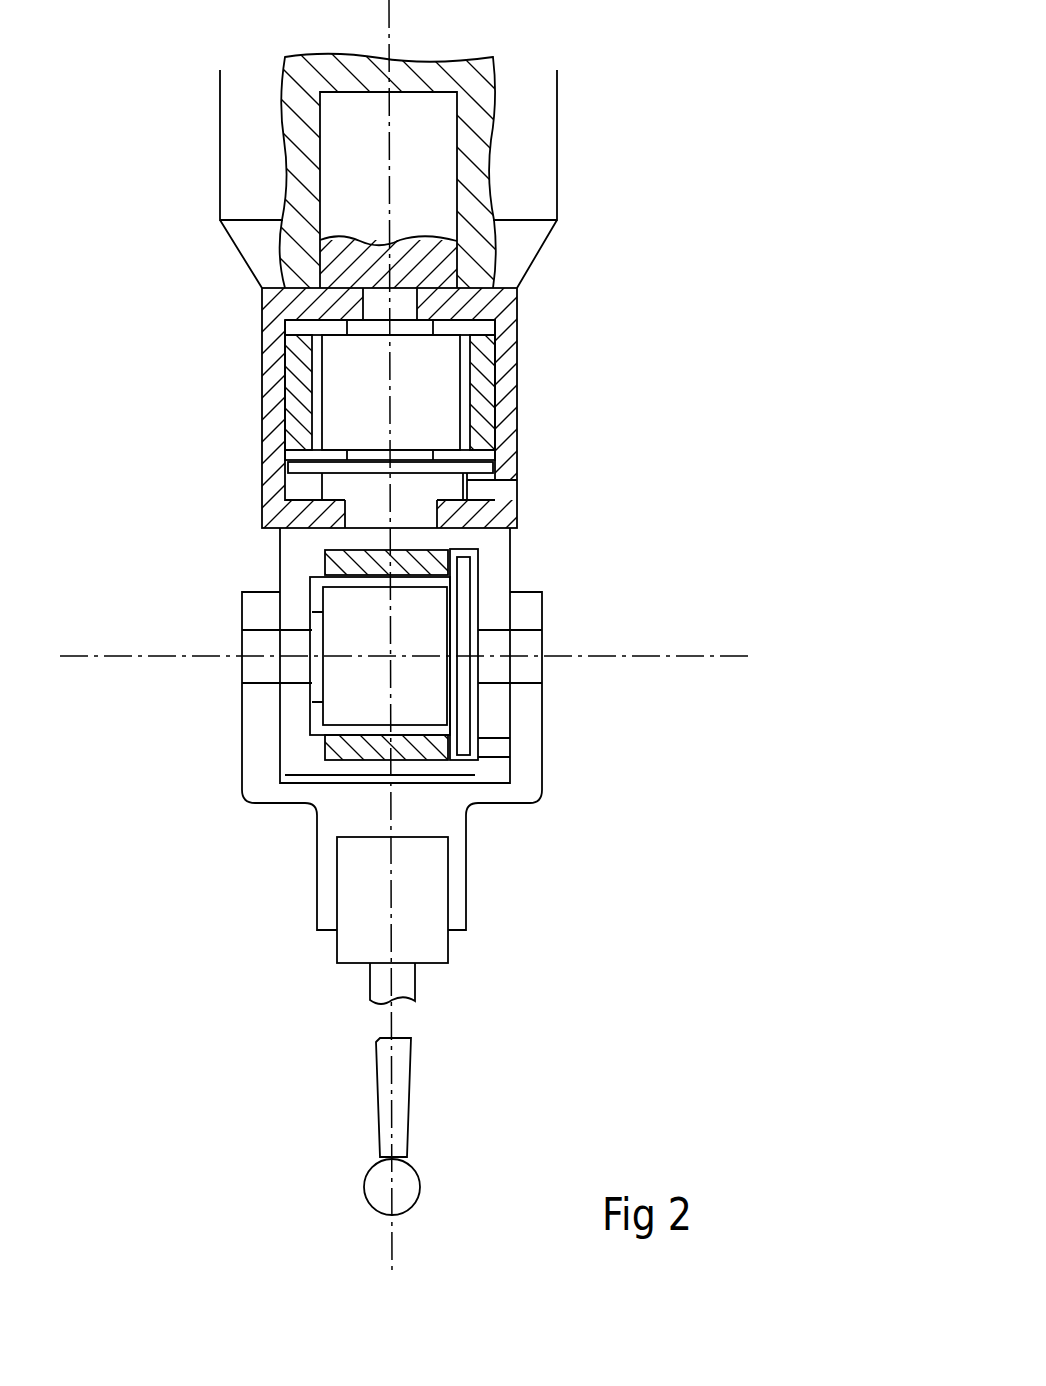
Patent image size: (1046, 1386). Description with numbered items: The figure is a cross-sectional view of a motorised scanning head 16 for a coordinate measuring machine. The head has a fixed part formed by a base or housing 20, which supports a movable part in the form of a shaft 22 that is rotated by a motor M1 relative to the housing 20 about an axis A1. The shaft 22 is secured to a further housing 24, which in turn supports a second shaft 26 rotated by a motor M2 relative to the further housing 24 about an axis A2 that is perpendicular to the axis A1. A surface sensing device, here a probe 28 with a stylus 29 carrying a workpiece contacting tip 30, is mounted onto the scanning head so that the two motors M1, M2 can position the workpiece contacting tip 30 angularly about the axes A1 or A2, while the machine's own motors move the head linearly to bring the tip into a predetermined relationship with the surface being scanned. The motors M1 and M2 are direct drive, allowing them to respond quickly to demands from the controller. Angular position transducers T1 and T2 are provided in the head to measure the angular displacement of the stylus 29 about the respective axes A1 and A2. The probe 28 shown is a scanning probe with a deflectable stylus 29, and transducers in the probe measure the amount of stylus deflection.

The motorised scanning head 16 is at (665, 333).
The housing 20 is at (262, 400).
The shaft 22 is at (367, 515).
The further housing 24 is at (510, 555).
The shaft 26 is at (498, 685).
The probe 28 is at (448, 885).
The stylus 29 is at (408, 1098).
The workpiece contacting tip 30 is at (365, 1187).
The motor M1 is at (437, 390).
The motor M2 is at (355, 698).
The angular position transducer T1 is at (300, 468).
The angular position transducer T2 is at (463, 738).
The axis A1 is at (432, 651).
The axis A2 is at (439, 681).